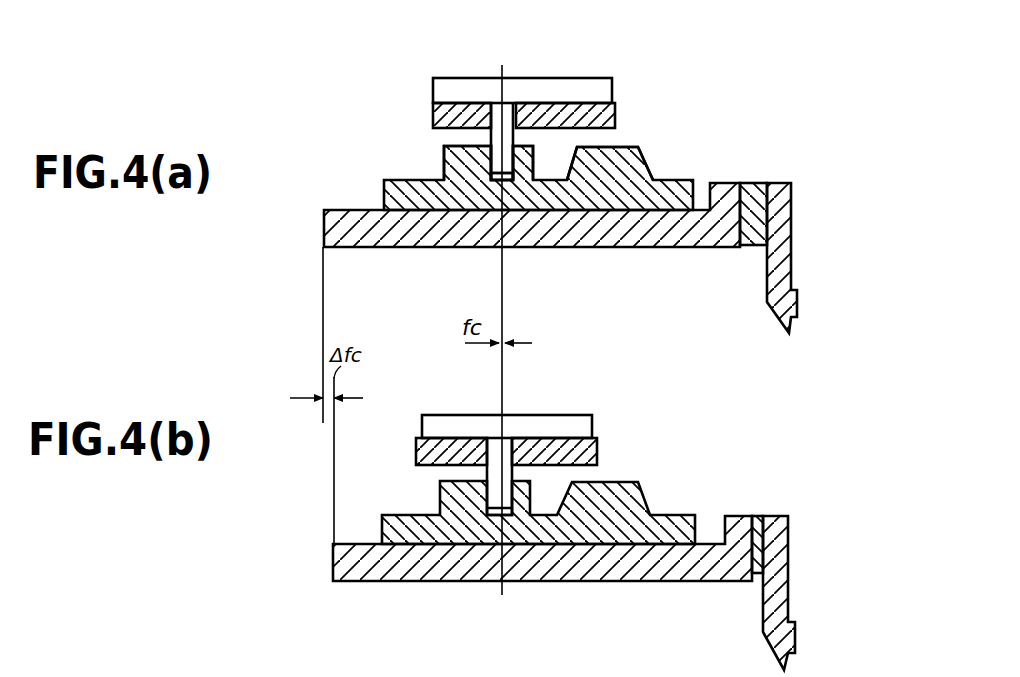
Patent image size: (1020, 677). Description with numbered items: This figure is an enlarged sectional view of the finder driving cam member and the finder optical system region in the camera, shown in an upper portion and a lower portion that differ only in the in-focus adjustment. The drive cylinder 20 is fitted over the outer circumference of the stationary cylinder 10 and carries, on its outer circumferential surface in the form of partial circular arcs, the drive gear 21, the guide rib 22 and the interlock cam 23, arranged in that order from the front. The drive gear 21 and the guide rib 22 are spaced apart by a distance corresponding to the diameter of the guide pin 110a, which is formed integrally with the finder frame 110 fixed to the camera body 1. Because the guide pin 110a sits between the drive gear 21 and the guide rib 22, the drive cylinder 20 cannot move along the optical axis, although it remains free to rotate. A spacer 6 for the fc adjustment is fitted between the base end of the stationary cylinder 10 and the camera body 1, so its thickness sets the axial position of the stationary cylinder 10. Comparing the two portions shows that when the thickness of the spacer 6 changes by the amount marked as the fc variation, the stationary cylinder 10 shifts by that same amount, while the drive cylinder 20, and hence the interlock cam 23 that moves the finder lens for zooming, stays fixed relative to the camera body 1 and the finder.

In FIG. 4A, the camera body 1 is at (447, 118).
In FIG. 4B, the camera body 1 is at (787, 553).
In FIG. 4A, the spacer 6 is at (754, 207).
In FIG. 4B, the spacer 6 is at (757, 538).
In FIG. 4A, the stationary cylinder 10 is at (324, 228).
In FIG. 4B, the stationary cylinder 10 is at (542, 548).
In FIG. 4A, the drive cylinder 20 is at (400, 190).
In FIG. 4B, the drive cylinder 20 is at (538, 512).
In FIG. 4A, the drive gear 21 is at (452, 165).
In FIG. 4A, the guide rib 22 is at (522, 157).
In FIG. 4A, the interlock cam 23 is at (630, 173).
In FIG. 4A, the finder frame 110 is at (470, 88).
In FIG. 4B, the finder frame 110 is at (507, 465).
In FIG. 4A, the guide pin 110a is at (512, 160).